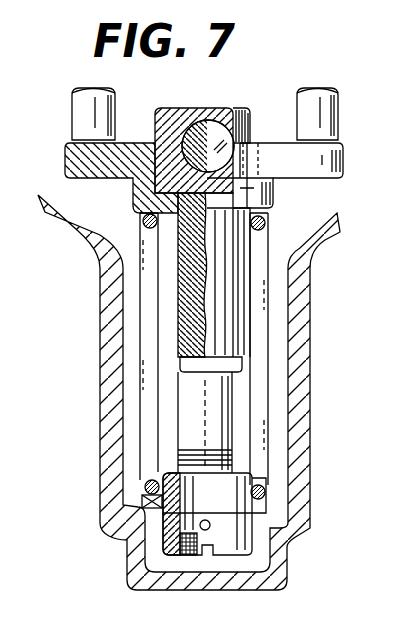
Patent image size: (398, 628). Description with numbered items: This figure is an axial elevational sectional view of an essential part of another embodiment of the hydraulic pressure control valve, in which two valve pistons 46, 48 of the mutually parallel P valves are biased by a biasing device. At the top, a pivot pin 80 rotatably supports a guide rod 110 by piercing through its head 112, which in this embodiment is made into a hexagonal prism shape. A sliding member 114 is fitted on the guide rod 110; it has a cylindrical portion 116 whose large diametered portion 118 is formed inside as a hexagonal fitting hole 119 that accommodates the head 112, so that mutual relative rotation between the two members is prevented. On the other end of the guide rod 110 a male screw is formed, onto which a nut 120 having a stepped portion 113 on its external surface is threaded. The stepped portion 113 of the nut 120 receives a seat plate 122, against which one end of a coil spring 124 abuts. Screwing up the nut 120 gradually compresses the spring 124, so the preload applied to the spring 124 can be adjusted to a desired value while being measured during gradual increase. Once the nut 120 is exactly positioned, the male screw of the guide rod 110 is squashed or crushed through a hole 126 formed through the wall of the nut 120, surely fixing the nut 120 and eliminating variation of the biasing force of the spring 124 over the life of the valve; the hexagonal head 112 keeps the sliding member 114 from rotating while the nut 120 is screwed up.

The valve piston 46 is at (82, 104).
The valve piston 48 is at (330, 114).
The pivot pin 80 is at (199, 128).
The guide rod 110 is at (227, 402).
The head 112 is at (240, 122).
The stepped portion 113 is at (135, 512).
The sliding member 114 is at (250, 315).
The cylindrical portion 116 is at (173, 288).
The large diametered portion 118 is at (273, 197).
The hexagonal fitting hole 119 is at (162, 180).
The nut 120 is at (242, 538).
The seat plate 122 is at (143, 503).
The coil spring 124 is at (146, 485).
The hole 126 is at (207, 527).